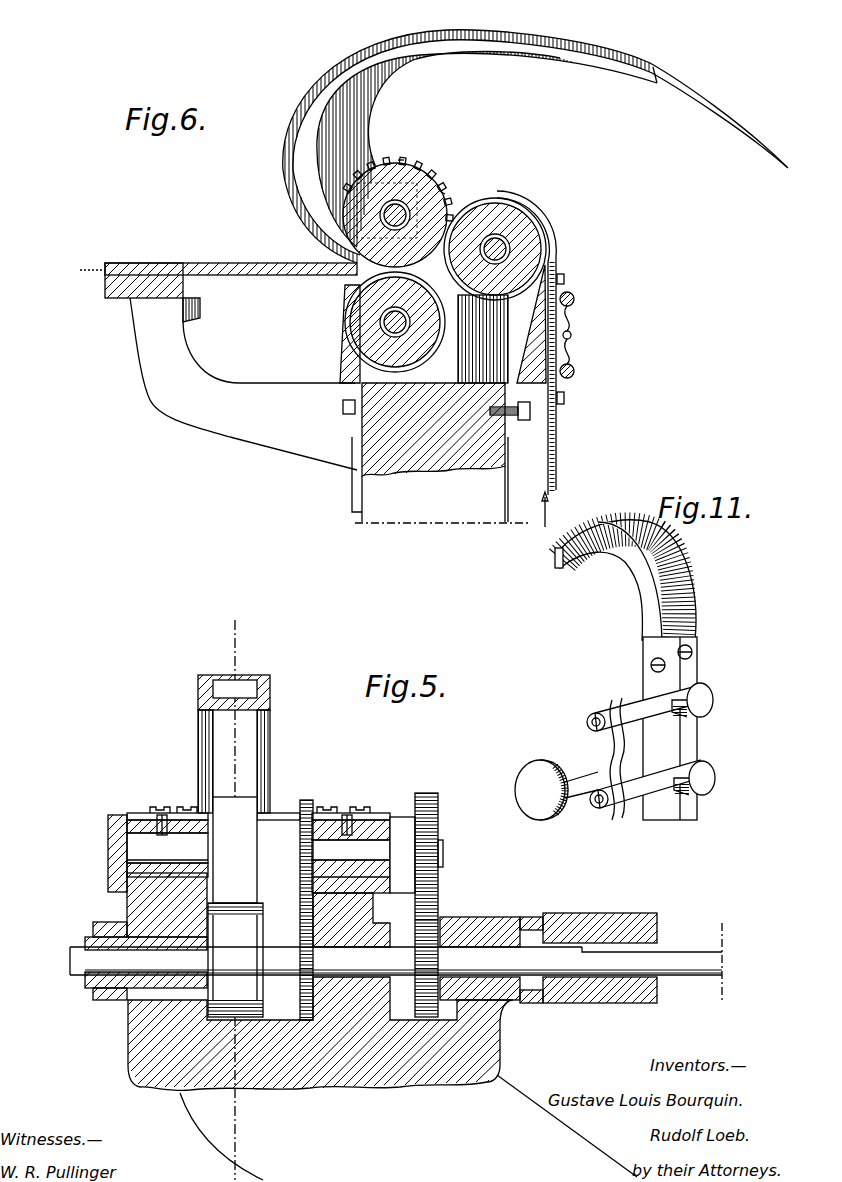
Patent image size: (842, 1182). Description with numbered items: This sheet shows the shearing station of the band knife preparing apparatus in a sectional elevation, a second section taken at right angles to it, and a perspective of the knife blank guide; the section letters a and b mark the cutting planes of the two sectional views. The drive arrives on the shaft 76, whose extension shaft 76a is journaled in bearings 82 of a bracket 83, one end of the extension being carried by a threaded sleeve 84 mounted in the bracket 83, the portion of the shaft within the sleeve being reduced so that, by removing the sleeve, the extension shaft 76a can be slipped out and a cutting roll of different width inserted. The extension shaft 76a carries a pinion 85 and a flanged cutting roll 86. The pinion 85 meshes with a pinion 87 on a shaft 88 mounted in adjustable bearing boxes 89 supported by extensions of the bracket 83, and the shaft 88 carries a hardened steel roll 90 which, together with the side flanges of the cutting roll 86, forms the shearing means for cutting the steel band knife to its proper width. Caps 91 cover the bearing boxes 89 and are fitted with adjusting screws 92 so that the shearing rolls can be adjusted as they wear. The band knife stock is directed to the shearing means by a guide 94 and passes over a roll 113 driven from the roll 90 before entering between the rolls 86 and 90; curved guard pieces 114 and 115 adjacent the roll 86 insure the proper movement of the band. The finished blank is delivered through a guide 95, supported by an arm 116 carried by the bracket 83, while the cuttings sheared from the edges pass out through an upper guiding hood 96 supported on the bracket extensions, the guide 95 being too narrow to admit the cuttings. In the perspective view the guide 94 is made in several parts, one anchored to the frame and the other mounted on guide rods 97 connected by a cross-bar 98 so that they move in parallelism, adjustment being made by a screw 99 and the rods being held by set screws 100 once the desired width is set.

In FIG. 6, the shaft 76 is at (301, 376).
In FIG. 5, the shaft 76 is at (652, 961).
In FIG. 5, the extension shaft 76a is at (326, 961).
In FIG. 5, the bearings 82 is at (486, 922).
In FIG. 6, the bracket 83 is at (436, 453).
In FIG. 5, the bracket 83 is at (130, 1045).
In FIG. 5, the threaded sleeve 84 is at (88, 978).
In FIG. 5, the pinion 85 is at (430, 925).
In FIG. 6, the cutting roll 86 is at (352, 323).
In FIG. 5, the cutting roll 86 is at (256, 962).
In FIG. 6, the pinion 87 is at (432, 170).
In FIG. 5, the pinion 87 is at (438, 809).
In FIG. 5, the shaft 88 is at (351, 860).
In FIG. 6, the adjustable bearing boxes 89 is at (444, 192).
In FIG. 5, the adjustable bearing boxes 89 is at (127, 850).
In FIG. 6, the hardened steel roll 90 is at (380, 167).
In FIG. 5, the hardened steel roll 90 is at (263, 908).
In FIG. 5, the caps 91 is at (366, 805).
In FIG. 5, the adjusting screws 92 is at (170, 830).
In FIG. 6, the guide 94 is at (563, 266).
In FIG. 11, the guide 94 is at (690, 598).
In FIG. 6, the guide 95 is at (273, 258).
In FIG. 6, the upper guiding hood 96 is at (320, 74).
In FIG. 5, the upper guiding hood 96 is at (270, 692).
In FIG. 6, the guide rods 97 is at (575, 299).
In FIG. 11, the guide rods 97 is at (623, 705).
In FIG. 11, the cross-bar 98 is at (598, 745).
In FIG. 6, the screw 99 is at (572, 335).
In FIG. 11, the screw 99 is at (672, 736).
In FIG. 11, the set screws 100 is at (703, 700).
In FIG. 6, the roll 113 is at (497, 203).
In FIG. 6, the curved guard piece 114 is at (340, 303).
In FIG. 6, the curved guard piece 115 is at (473, 322).
In FIG. 6, the arm 116 is at (243, 384).
In FIG. 6, the section line a is at (395, 52).
In FIG. 5, the section line b is at (234, 889).